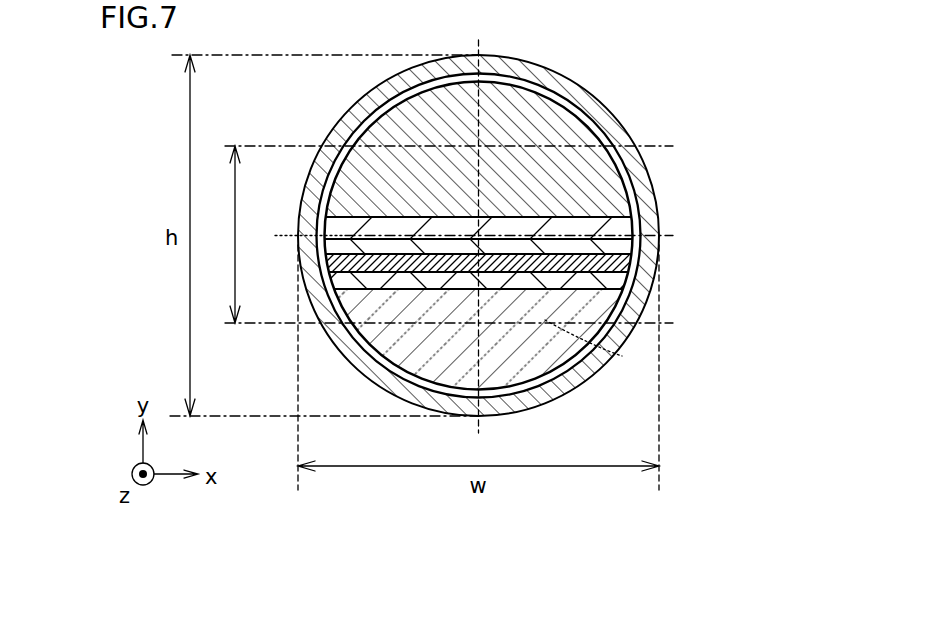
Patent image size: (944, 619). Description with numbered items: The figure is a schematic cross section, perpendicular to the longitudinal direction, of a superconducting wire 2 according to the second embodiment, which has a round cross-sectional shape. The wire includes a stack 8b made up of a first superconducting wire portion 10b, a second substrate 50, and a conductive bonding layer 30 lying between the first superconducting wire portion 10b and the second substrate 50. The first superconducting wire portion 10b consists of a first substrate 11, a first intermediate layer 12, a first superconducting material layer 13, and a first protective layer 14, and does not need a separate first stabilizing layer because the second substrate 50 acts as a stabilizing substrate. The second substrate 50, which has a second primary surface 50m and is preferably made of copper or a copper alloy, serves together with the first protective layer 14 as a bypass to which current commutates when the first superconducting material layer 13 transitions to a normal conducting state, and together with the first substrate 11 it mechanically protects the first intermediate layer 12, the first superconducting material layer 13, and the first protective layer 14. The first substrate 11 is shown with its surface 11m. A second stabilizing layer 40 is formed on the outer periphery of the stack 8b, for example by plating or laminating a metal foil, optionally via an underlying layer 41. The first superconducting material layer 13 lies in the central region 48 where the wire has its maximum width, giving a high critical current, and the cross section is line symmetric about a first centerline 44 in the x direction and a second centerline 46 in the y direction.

The superconducting wire 2 is at (555, 217).
The second stabilizing layer 40 is at (545, 83).
The underlying layer 41 is at (552, 102).
The second substrate 50 is at (583, 193).
The second primary surface 50m is at (503, 207).
The conductive bonding layer 30 is at (607, 228).
The stack 8b is at (555, 165).
The first superconducting wire portion 10b is at (532, 331).
The first protective layer 14 is at (575, 247).
The first superconducting material layer 13 is at (565, 263).
The first intermediate layer 12 is at (552, 278).
The first substrate 11 is at (540, 290).
The surface of first layer 11m is at (500, 288).
The first centerline 44 is at (478, 456).
The second centerline 46 is at (295, 238).
The central region 48 is at (220, 234).